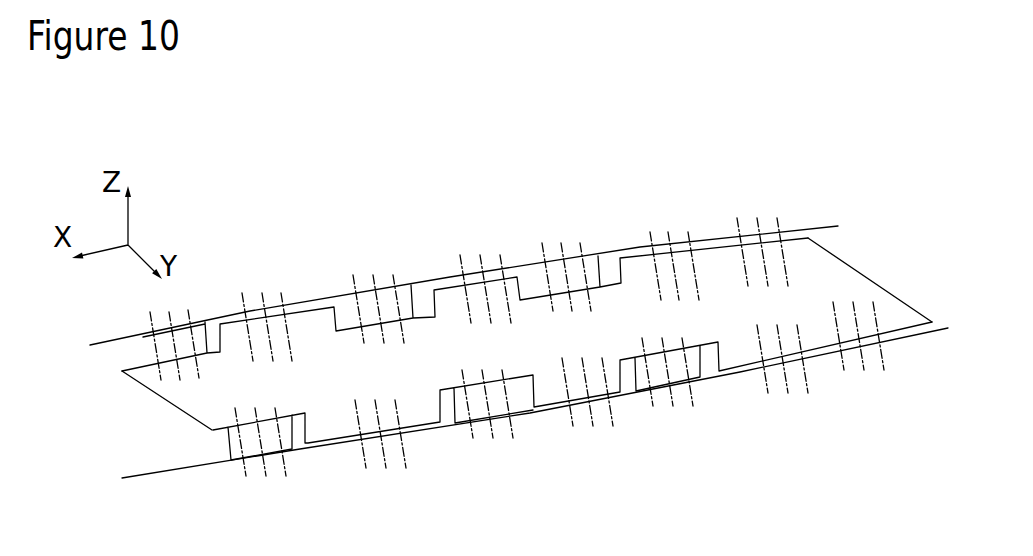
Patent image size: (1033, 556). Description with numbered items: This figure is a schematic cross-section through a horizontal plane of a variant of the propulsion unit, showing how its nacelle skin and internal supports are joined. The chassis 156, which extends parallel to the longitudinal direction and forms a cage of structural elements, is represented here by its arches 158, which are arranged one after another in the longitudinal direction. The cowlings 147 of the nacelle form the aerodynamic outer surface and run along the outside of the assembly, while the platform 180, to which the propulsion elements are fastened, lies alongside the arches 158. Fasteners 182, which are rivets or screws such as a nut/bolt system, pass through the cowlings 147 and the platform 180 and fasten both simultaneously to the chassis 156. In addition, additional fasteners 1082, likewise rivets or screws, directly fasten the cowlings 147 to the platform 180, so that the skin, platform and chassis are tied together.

The chassis 156 is at (830, 188).
The cowlings 147 is at (711, 241).
The arches 158 is at (345, 297).
The fasteners 182 is at (542, 252).
The platform 180 is at (187, 395).
The additional fasteners 1082 is at (592, 422).